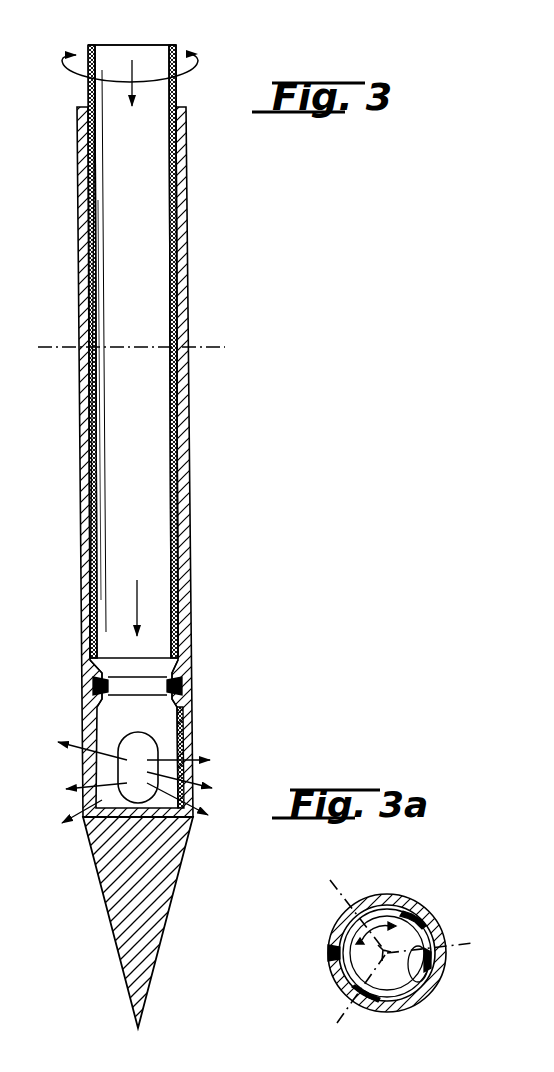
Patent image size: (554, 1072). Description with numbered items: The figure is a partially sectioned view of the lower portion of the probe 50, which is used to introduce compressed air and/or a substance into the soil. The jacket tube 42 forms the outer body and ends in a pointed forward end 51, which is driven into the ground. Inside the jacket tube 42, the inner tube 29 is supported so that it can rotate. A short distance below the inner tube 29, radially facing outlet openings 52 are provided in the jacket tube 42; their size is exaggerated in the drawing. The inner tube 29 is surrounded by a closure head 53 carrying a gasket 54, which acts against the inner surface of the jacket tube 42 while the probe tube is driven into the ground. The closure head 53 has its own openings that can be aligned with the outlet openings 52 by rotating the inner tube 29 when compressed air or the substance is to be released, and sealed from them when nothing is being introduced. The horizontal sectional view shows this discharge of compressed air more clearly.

In FIG. 3, the inner tube 29 is at (185, 445).
In FIG. 3, the jacket tube 42 is at (185, 733).
In FIG. 3a, the jacket tube 42 is at (438, 922).
In FIG. 3, the probe 50 is at (220, 287).
In FIG. 3, the pointed forward end 51 is at (155, 937).
In FIG. 3, the outlet openings 52 is at (121, 767).
In FIG. 3a, the outlet openings 52 is at (414, 911).
In FIG. 3, the closure head 53 is at (95, 700).
In FIG. 3a, the closure head 53 is at (380, 994).
In FIG. 3, the gasket 54 is at (182, 685).
In FIG. 3a, the gasket 54 is at (423, 982).